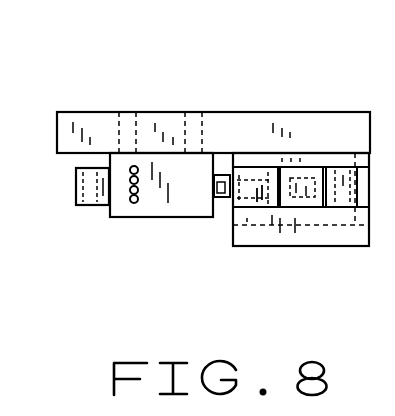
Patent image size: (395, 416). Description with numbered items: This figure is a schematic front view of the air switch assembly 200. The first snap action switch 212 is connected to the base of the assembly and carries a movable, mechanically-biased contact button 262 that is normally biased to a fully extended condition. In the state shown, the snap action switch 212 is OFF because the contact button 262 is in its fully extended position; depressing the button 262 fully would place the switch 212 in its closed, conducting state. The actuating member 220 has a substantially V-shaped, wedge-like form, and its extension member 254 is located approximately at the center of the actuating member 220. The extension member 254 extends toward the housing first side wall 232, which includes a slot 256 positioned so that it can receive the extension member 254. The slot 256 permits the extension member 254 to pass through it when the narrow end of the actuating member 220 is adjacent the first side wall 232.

The air switch assembly 200 is at (216, 108).
The first snap action switch 212 is at (117, 218).
The first switch button 262 is at (220, 175).
The slot 256 is at (250, 171).
The extension member 254 is at (233, 198).
The actuating member 220 is at (265, 193).
The first side wall 232 is at (243, 214).